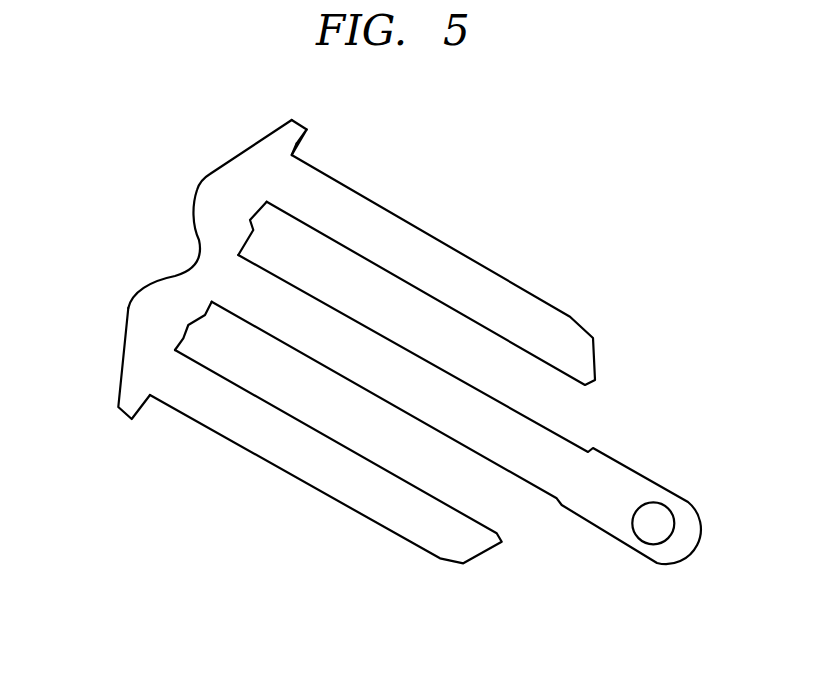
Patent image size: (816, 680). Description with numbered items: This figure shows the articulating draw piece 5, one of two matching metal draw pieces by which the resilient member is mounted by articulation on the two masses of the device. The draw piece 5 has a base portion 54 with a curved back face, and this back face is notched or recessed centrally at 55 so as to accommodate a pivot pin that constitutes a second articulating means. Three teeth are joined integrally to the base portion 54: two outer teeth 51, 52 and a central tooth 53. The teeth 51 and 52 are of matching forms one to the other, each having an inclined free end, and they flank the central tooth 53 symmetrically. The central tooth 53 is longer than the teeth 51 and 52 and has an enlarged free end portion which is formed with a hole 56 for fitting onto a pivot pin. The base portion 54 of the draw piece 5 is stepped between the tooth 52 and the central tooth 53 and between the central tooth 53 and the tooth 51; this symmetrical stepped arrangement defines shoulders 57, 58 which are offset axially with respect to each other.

The draw piece 5 is at (320, 503).
The tooth 51 is at (480, 262).
The tooth 52 is at (368, 518).
The central tooth 53 is at (615, 478).
The base portion 54 is at (123, 362).
The notch 55 is at (197, 233).
The hole 56 is at (652, 508).
The shoulder 57 is at (290, 215).
The shoulder 58 is at (243, 247).